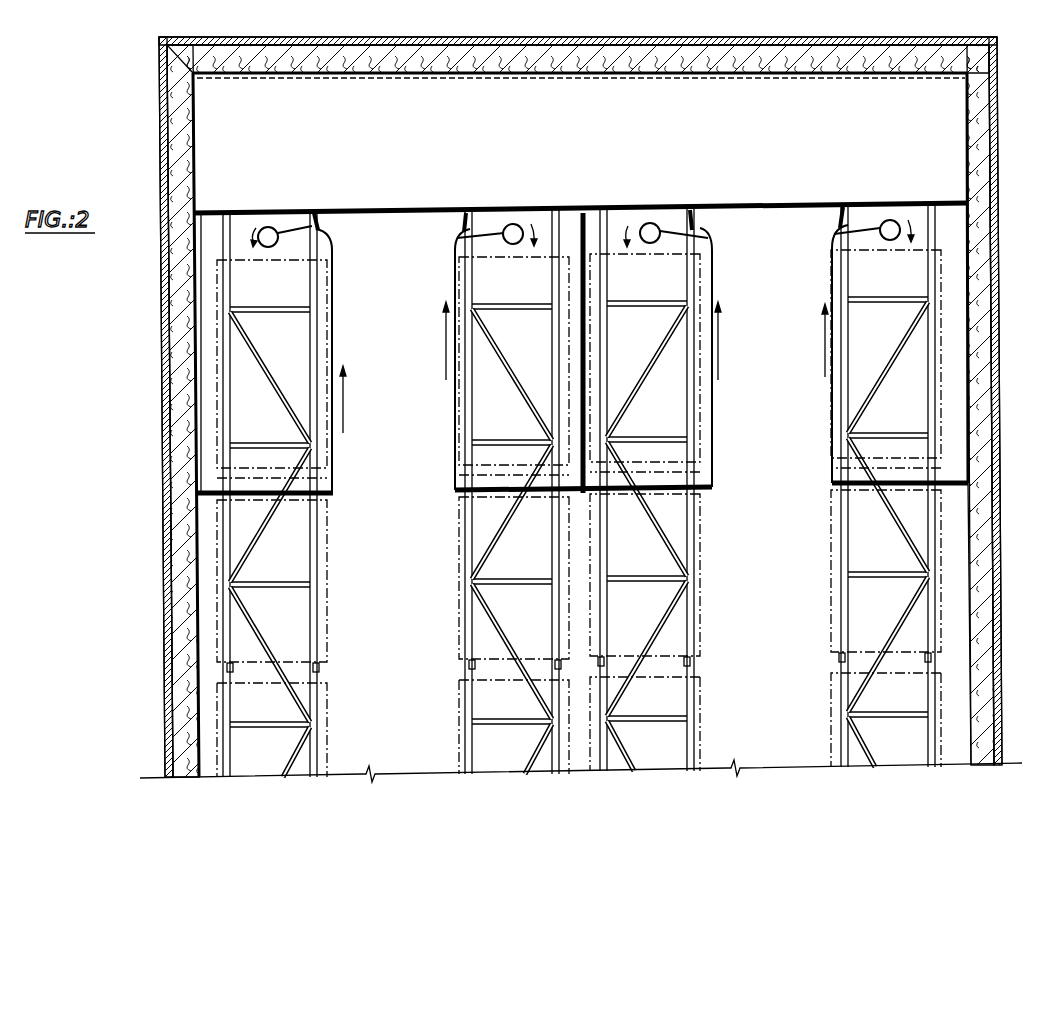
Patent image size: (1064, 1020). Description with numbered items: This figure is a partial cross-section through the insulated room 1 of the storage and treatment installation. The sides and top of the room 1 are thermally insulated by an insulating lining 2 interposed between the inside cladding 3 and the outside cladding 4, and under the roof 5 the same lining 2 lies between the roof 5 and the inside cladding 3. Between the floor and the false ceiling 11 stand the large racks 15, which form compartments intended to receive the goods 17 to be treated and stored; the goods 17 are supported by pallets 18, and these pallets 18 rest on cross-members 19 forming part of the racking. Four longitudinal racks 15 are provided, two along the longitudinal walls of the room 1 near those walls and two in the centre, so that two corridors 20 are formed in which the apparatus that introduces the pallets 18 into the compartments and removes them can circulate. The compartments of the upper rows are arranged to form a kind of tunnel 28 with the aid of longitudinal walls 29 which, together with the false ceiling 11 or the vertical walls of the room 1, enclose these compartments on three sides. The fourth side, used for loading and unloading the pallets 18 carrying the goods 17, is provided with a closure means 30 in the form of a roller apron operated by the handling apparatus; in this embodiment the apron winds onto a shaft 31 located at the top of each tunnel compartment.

The room 1 is at (1004, 271).
The insulating lining 2 is at (178, 146).
The inside cladding 3 is at (965, 122).
The outside cladding 4 is at (160, 73).
The roof 5 is at (483, 40).
The false ceiling 11 is at (731, 205).
The rack 15 is at (473, 549).
The goods 17 is at (295, 358).
The pallet 18 is at (332, 468).
The cross-member 19 is at (305, 478).
The corridor 20 is at (410, 710).
The tunnel 28 is at (207, 325).
The longitudinal wall 29 is at (583, 230).
The closure means 30 is at (337, 278).
The shaft 31 is at (267, 227).